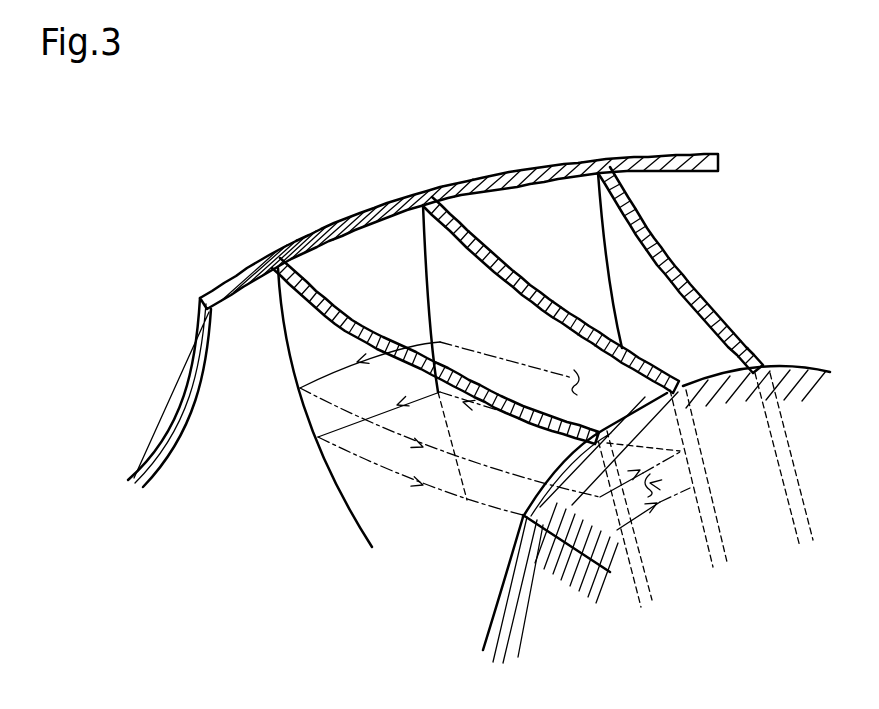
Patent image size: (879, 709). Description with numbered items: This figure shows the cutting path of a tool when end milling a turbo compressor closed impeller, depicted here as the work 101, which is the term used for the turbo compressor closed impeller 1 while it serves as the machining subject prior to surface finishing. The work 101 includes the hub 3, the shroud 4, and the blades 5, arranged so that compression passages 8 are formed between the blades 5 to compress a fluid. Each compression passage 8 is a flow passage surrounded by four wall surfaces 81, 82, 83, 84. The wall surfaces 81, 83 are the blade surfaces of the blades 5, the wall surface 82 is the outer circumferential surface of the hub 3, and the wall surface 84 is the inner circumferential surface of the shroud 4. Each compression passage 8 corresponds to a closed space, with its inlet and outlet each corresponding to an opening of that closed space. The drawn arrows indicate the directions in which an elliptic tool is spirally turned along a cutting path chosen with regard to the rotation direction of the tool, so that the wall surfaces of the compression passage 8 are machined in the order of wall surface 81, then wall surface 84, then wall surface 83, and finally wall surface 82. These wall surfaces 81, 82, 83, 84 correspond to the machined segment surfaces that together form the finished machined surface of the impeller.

The work 101 is at (585, 133).
The turbo compressor closed impeller 1 is at (481, 308).
The shroud 4 is at (667, 156).
The blades 5 is at (327, 303).
The compression passage 8 is at (409, 306).
The wall surface 81 is at (488, 288).
The wall surface 82 is at (625, 408).
The wall surface 83 is at (365, 313).
The wall surface 84 is at (363, 240).
The hub 3 is at (790, 377).